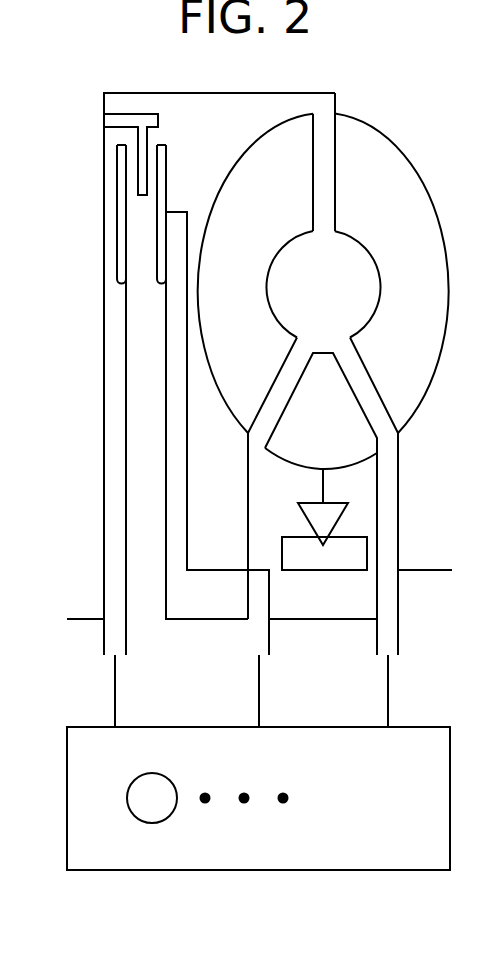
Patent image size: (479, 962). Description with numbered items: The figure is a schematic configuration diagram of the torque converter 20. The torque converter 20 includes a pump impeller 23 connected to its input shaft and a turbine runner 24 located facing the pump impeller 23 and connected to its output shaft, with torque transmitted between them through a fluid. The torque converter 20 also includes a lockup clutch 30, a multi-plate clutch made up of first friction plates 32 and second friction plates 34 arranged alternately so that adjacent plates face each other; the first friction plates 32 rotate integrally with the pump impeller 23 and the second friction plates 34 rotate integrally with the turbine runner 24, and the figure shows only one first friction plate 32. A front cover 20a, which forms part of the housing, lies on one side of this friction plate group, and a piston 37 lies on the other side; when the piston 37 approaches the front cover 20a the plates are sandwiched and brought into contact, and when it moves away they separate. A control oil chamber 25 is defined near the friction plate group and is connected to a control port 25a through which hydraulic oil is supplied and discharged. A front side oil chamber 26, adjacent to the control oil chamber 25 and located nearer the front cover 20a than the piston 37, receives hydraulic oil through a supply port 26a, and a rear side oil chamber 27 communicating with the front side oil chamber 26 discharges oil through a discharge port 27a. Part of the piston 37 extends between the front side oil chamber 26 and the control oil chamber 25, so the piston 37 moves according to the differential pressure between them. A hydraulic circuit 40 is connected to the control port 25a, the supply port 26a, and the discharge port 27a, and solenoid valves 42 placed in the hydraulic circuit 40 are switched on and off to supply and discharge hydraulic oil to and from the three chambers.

The torque converter 20 is at (360, 107).
The front cover 20a is at (104, 242).
The pump impeller 23 is at (397, 167).
The turbine runner 24 is at (228, 385).
The control oil chamber 25 is at (215, 582).
The control port 25a is at (258, 640).
The front side oil chamber 26 is at (113, 473).
The supply port 26a is at (117, 640).
The rear side oil chamber 27 is at (325, 132).
The discharge port 27a is at (387, 635).
The lockup clutch 30 is at (97, 137).
The first friction plate 32 is at (147, 132).
The second friction plate 34 is at (118, 287).
The piston 37 is at (167, 388).
The hydraulic circuit 40 is at (425, 727).
The solenoid valve 42 is at (152, 823).